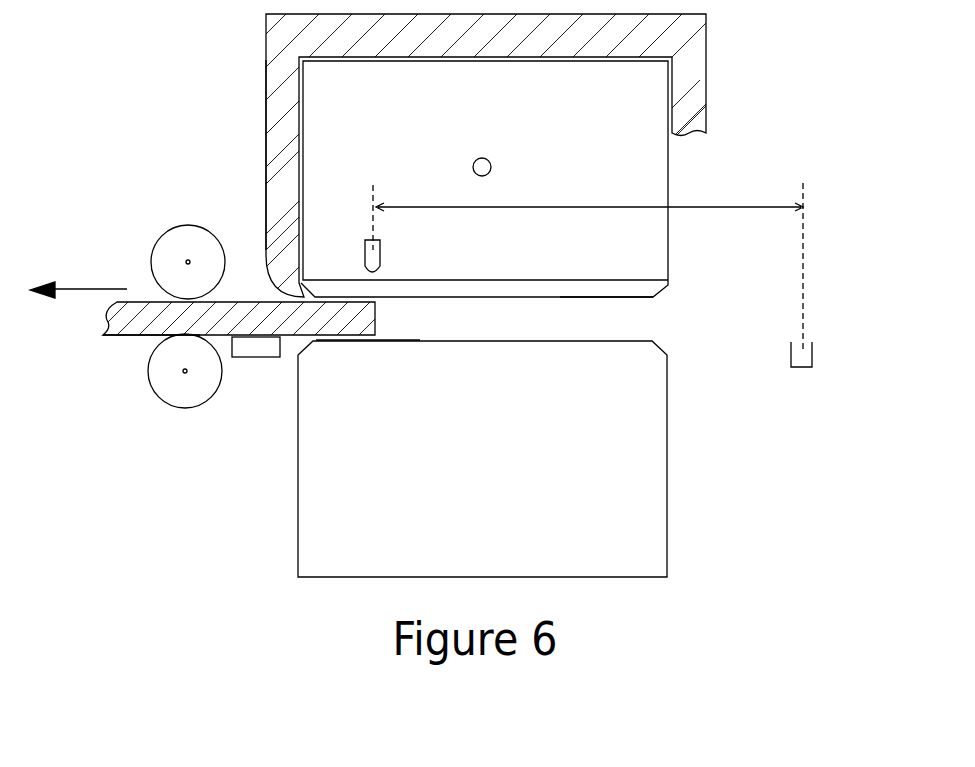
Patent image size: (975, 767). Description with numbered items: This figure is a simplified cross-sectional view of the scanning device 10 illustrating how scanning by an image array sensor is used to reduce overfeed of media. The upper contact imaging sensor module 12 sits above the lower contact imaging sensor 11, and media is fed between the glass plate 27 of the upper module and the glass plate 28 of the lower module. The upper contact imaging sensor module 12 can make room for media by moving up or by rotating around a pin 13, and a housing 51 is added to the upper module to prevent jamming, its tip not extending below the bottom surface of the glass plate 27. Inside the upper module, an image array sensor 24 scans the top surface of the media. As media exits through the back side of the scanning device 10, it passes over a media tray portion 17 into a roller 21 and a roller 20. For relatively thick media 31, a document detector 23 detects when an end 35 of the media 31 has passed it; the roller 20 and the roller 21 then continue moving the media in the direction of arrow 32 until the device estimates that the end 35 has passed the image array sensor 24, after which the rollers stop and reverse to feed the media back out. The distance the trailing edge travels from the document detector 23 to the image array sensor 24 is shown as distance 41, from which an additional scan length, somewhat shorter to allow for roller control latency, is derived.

The scanning device 10 is at (735, 63).
The lower contact imaging sensor 11 is at (668, 540).
The upper contact imaging sensor module 12 is at (660, 160).
The pin 13 is at (491, 163).
The media tray portion 17 is at (248, 360).
The roller 20 is at (170, 408).
The roller 21 is at (187, 225).
The document detector 23 is at (806, 367).
The image array sensor 24 is at (380, 252).
The glass plate 27 is at (562, 289).
The glass plate 28 is at (486, 340).
The media 31 is at (127, 336).
The arrow 32 is at (82, 289).
The end 35 is at (375, 315).
The distance 41 is at (508, 207).
The housing 51 is at (265, 57).